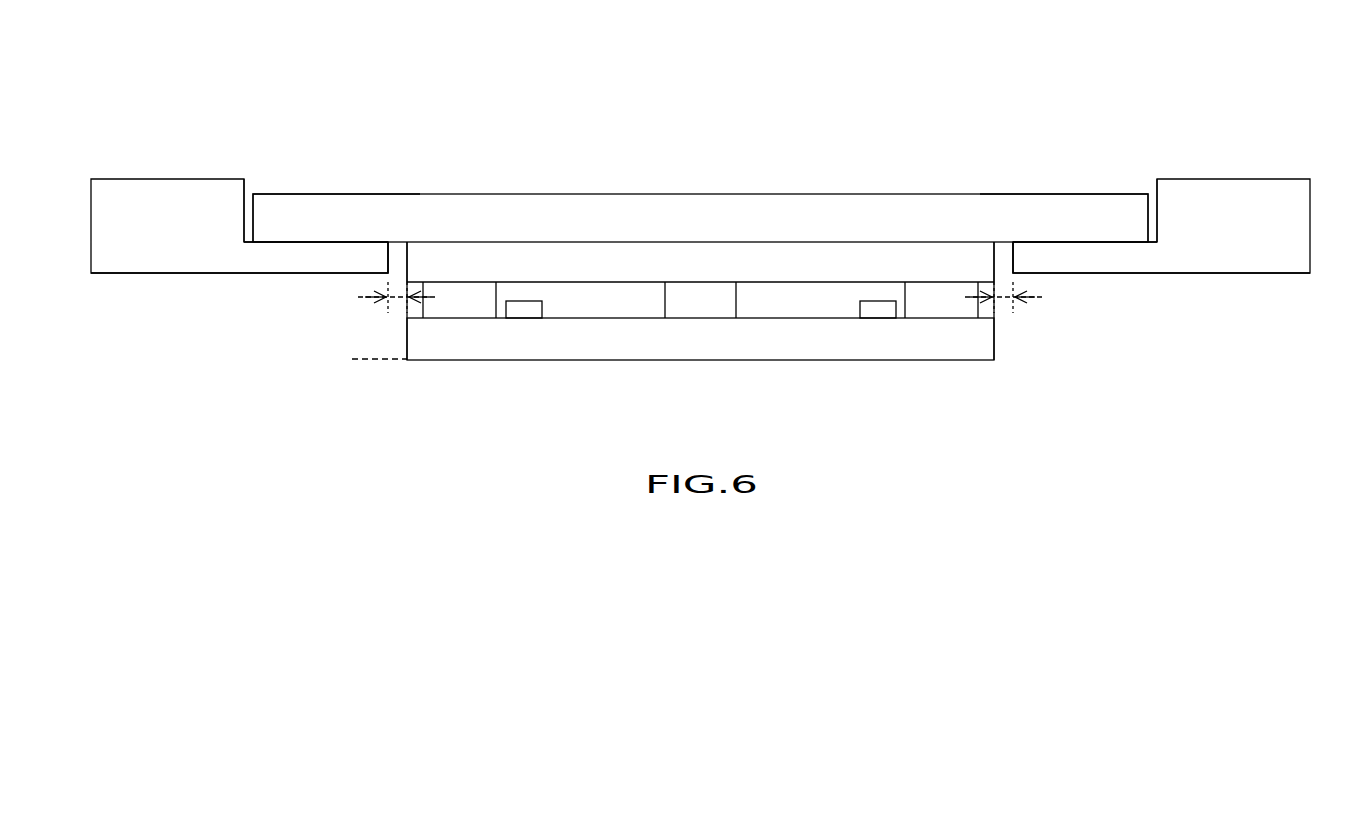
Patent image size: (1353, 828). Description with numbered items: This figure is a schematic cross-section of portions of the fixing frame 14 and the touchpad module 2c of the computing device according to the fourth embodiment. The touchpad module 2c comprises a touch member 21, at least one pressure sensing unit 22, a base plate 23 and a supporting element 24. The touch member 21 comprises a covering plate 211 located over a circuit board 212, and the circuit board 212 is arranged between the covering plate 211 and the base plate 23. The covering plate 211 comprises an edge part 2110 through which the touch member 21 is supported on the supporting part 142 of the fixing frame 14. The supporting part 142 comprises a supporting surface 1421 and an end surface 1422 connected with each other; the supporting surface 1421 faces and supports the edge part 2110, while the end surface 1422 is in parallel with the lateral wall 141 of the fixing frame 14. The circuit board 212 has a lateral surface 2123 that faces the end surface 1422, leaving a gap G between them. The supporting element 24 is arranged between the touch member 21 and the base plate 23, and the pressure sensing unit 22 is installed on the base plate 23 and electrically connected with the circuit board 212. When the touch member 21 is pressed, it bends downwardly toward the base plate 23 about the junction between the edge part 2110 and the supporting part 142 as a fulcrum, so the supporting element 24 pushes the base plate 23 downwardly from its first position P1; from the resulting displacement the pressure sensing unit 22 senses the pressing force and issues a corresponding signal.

The touchpad module 2c is at (905, 138).
The touch member 21 is at (268, 47).
The covering plate 211 is at (802, 176).
The edge part 2110 is at (282, 207).
The circuit board 212 is at (634, 223).
The lateral surface 2123 is at (410, 267).
The pressure sensing unit 22 is at (523, 310).
The base plate 23 is at (694, 343).
The supporting element 24 is at (455, 296).
The fixing frame 14 is at (402, 47).
The lateral wall 141 is at (1212, 166).
The supporting part 142 is at (1133, 294).
The supporting surface 1421 is at (351, 237).
The end surface 1422 is at (385, 254).
The gap G is at (700, 310).
The first position P1 is at (362, 360).